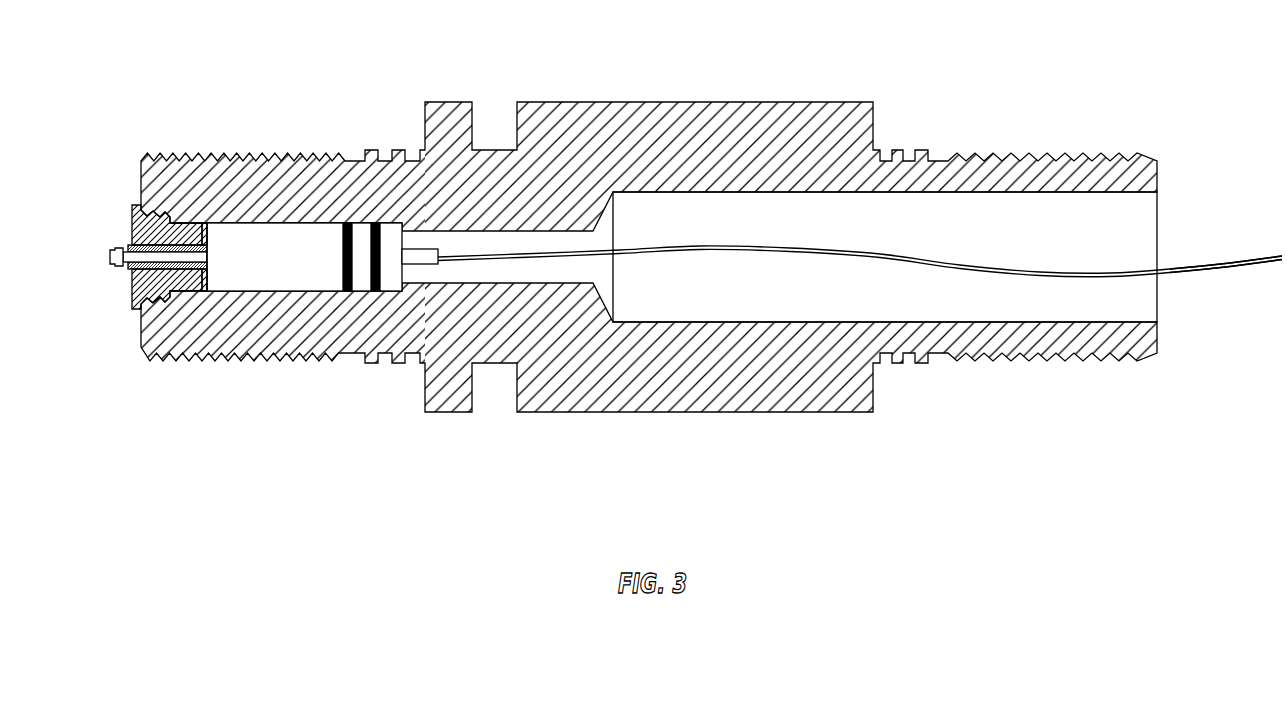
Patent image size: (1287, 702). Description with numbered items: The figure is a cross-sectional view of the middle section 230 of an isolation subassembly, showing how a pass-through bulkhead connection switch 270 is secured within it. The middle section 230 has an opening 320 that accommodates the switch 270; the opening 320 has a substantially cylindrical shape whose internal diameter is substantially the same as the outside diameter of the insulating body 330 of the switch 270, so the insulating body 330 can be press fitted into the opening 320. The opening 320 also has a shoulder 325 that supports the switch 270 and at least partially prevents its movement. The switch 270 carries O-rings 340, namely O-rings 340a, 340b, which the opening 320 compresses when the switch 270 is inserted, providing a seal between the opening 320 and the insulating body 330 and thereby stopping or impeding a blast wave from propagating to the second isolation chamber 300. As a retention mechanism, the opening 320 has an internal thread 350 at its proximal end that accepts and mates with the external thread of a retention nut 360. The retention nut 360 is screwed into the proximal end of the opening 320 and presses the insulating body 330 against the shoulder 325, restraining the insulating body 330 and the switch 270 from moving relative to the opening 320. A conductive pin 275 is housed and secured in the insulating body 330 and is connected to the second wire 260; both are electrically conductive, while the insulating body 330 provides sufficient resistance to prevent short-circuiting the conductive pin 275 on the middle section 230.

The middle section 230 is at (722, 102).
The second wire 260 is at (1212, 272).
The pass-through bulkhead connection switch 270 is at (267, 292).
The conductive pin 275 is at (438, 229).
The second isolation chamber 300 is at (853, 292).
The opening 320 is at (274, 222).
The shoulder 325 is at (424, 257).
The insulating body 330 is at (209, 288).
The O-rings 340 is at (355, 352).
The O-ring 340a is at (344, 291).
The O-ring 340b is at (375, 291).
The internal thread 350 is at (160, 207).
The retention nut 360 is at (140, 288).